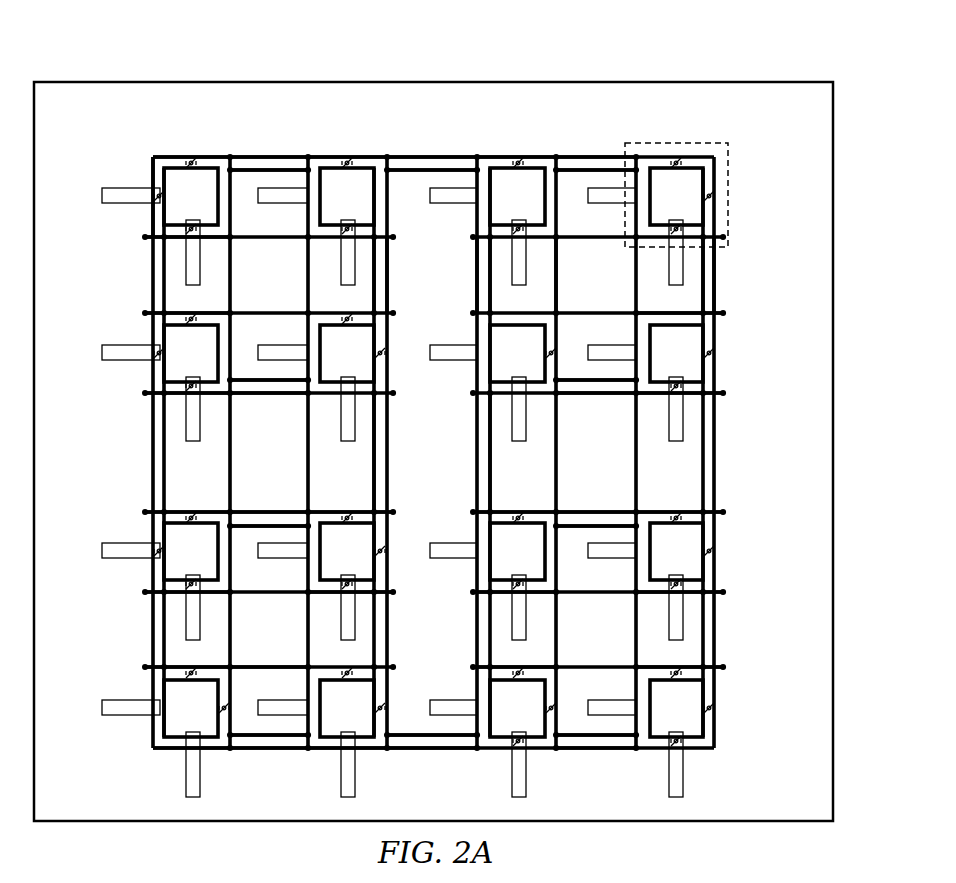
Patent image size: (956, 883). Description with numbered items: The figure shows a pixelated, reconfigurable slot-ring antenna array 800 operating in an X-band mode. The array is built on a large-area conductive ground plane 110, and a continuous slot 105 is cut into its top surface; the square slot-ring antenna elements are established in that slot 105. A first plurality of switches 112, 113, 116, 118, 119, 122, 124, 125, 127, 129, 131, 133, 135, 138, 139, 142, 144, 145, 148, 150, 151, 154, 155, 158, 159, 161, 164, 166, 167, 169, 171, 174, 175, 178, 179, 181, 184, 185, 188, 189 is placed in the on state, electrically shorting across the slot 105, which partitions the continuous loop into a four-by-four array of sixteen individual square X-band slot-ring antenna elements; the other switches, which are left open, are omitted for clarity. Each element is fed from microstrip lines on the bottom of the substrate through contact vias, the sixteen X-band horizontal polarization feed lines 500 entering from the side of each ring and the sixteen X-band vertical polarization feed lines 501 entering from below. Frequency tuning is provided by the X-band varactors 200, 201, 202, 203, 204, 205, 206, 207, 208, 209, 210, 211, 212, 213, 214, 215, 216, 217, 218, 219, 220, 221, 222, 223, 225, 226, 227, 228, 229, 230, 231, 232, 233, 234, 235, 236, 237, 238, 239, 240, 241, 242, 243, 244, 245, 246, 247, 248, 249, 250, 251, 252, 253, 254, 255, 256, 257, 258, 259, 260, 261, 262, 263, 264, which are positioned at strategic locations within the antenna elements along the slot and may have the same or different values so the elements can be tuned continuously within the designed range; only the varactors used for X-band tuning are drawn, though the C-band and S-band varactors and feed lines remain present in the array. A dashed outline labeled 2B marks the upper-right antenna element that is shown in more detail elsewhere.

The slot-ring antenna array 800 is at (225, 22).
The conductive ground plane 110 is at (395, 80).
The detail region 2B is at (695, 143).
The X-band horizontal polarization feed lines 500 is at (102, 197).
The X-band vertical polarization feed lines 501 is at (200, 265).
The X-band varactor 200 is at (188, 160).
The switch 112 is at (222, 158).
The switch 113 is at (300, 157).
The X-band varactor 204 is at (314, 137).
The switch 116 is at (360, 146).
The switch 131 is at (467, 155).
The X-band varactor 212 is at (516, 163).
The switch 133 is at (548, 155).
The switch 135 is at (623, 155).
The X-band varactor 216 is at (691, 160).
The slot 105 is at (150, 174).
The X-band varactor 203 is at (158, 201).
The switch 129 is at (151, 239).
The switch 127 is at (151, 315).
The X-band varactor 264 is at (159, 357).
The switch 125 is at (151, 396).
The switch 181 is at (151, 505).
The X-band varactor 248 is at (158, 542).
The switch 179 is at (151, 596).
The X-band varactor 257 is at (163, 662).
The switch 178 is at (151, 669).
The X-band varactor 259 is at (155, 752).
The X-band varactor 217 is at (722, 199).
The switch 138 is at (722, 256).
The X-band varactor 220 is at (715, 316).
The X-band varactor 221 is at (715, 355).
The switch 142 is at (715, 392).
The switch 151 is at (715, 505).
The X-band varactor 234 is at (715, 552).
The switch 154 is at (715, 585).
The switch 155 is at (708, 666).
The X-band varactor 238 is at (712, 713).
The X-band varactor 239 is at (683, 737).
The X-band varactor 201 is at (234, 179).
The X-band varactor 207 is at (322, 200).
The X-band varactor 205 is at (390, 176).
The X-band varactor 215 is at (493, 200).
The X-band varactor 213 is at (567, 176).
The X-band varactor 219 is at (653, 200).
The X-band varactor 202 is at (203, 231).
The X-band varactor 206 is at (333, 234).
The switch 118 is at (390, 242).
The switch 150 is at (477, 261).
The X-band varactor 214 is at (524, 234).
The X-band varactor 218 is at (671, 231).
The switch 139 is at (703, 309).
The switch 119 is at (390, 296).
The switch 148 is at (496, 311).
The X-band varactor 225 is at (560, 315).
The X-band varactor 261 is at (193, 319).
The X-band varactor 208 is at (339, 315).
The X-band varactor 262 is at (218, 349).
The switch 122 is at (302, 380).
The X-band varactor 211 is at (324, 358).
The X-band varactor 209 is at (386, 353).
The X-band varactor 226 is at (542, 339).
The X-band varactor 228 is at (492, 358).
The X-band varactor 223 is at (653, 358).
The switch 145 is at (569, 381).
The X-band varactor 263 is at (210, 386).
The switch 124 is at (250, 391).
The X-band varactor 210 is at (374, 402).
The X-band varactor 227 is at (494, 397).
The switch 144 is at (601, 397).
The X-band varactor 222 is at (676, 389).
The X-band varactor 245 is at (207, 510).
The switch 184 is at (237, 512).
The switch 185 is at (316, 512).
The X-band varactor 249 is at (391, 512).
The X-band varactor 229 is at (495, 512).
The switch 167 is at (537, 512).
The switch 169 is at (628, 512).
The X-band varactor 233 is at (660, 510).
The X-band varactor 246 is at (230, 530).
The X-band varactor 252 is at (327, 555).
The X-band varactor 250 is at (384, 552).
The X-band varactor 232 is at (493, 555).
The X-band varactor 230 is at (563, 541).
The X-band varactor 236 is at (653, 555).
The X-band varactor 247 is at (206, 584).
The X-band varactor 251 is at (335, 587).
The switch 188 is at (387, 600).
The switch 166 is at (482, 600).
The X-band varactor 231 is at (522, 589).
The X-band varactor 235 is at (666, 589).
The X-band varactor 253 is at (232, 668).
The switch 189 is at (351, 656).
The switch 164 is at (473, 664).
The X-band varactor 241 is at (521, 672).
The X-band varactor 237 is at (670, 671).
The X-band varactor 258 is at (232, 695).
The X-band varactor 260 is at (165, 711).
The X-band varactor 256 is at (327, 711).
The X-band varactor 254 is at (387, 708).
The X-band varactor 244 is at (497, 711).
The X-band varactor 242 is at (563, 706).
The X-band varactor 240 is at (653, 711).
The switch 174 is at (303, 737).
The switch 171 is at (388, 739).
The switch 158 is at (632, 738).
The switch 175 is at (256, 750).
The X-band varactor 255 is at (383, 751).
The switch 161 is at (475, 749).
The X-band varactor 243 is at (527, 740).
The switch 159 is at (571, 750).